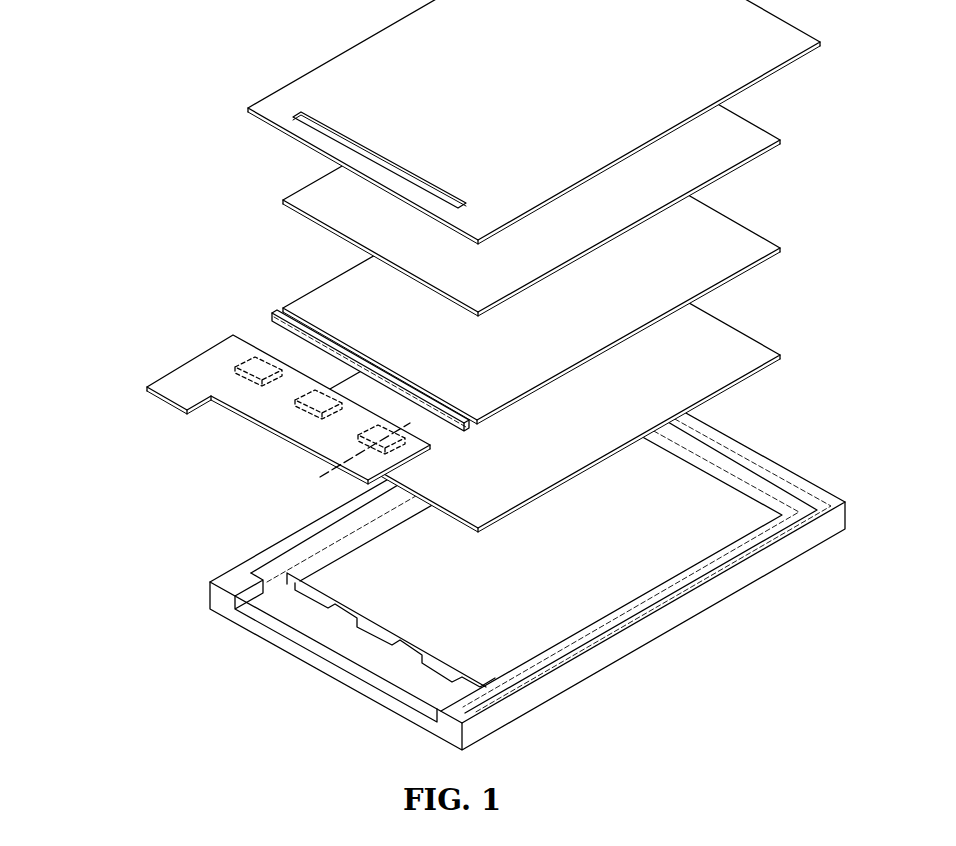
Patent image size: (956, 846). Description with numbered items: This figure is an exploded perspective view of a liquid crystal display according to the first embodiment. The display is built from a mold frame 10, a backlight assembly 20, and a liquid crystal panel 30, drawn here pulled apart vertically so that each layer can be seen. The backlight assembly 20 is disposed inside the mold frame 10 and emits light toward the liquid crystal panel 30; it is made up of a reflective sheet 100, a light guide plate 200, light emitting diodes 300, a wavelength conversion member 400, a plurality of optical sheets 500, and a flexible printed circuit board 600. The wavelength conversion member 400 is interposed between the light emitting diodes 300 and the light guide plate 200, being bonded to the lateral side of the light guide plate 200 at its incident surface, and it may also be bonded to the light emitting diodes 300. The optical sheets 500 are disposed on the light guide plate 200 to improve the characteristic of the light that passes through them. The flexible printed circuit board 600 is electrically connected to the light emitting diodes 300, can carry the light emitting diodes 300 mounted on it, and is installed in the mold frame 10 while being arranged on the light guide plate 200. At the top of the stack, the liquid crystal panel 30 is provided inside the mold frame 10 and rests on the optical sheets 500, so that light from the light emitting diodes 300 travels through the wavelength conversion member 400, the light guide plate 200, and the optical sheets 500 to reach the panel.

The mold frame 10 is at (233, 563).
The backlight assembly 20 is at (80, 260).
The liquid crystal panel 30 is at (341, 73).
The reflective sheet 100 is at (462, 500).
The light guide plate 200 is at (320, 312).
The light emitting diodes 300 is at (250, 383).
The wavelength conversion member 400 is at (273, 322).
The optical sheets 500 is at (358, 223).
The flexible printed circuit board 600 is at (222, 348).